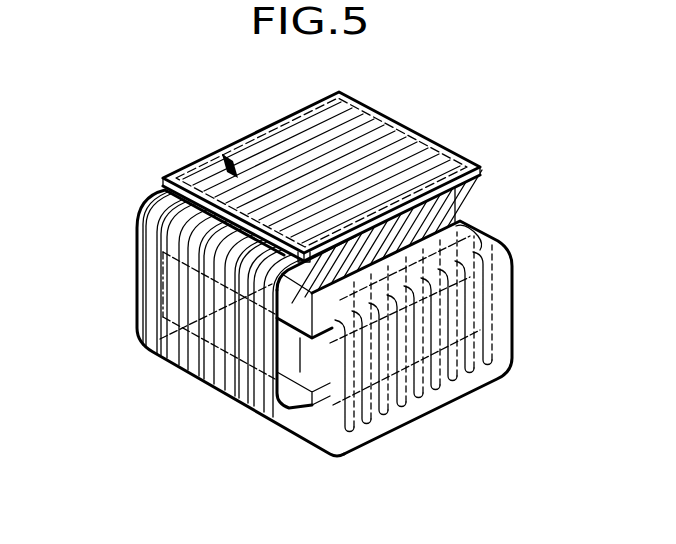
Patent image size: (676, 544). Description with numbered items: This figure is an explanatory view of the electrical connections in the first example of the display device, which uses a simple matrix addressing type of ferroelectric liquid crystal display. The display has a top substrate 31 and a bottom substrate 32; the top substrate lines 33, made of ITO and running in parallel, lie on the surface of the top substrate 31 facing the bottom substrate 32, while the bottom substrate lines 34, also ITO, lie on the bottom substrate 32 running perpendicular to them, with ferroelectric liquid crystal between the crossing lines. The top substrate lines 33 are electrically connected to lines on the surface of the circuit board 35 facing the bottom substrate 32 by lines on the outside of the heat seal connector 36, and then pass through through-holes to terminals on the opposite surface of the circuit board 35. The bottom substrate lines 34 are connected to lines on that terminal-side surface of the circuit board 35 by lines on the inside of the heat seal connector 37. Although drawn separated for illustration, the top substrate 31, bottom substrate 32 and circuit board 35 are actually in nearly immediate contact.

The top substrate 31 is at (410, 135).
The bottom substrate 32 is at (436, 214).
The top substrate lines 33 is at (214, 153).
The bottom substrate lines 34 is at (482, 238).
The circuit board 35 is at (284, 424).
The heat seal connector 36 is at (137, 299).
The heat seal connector 37 is at (513, 294).